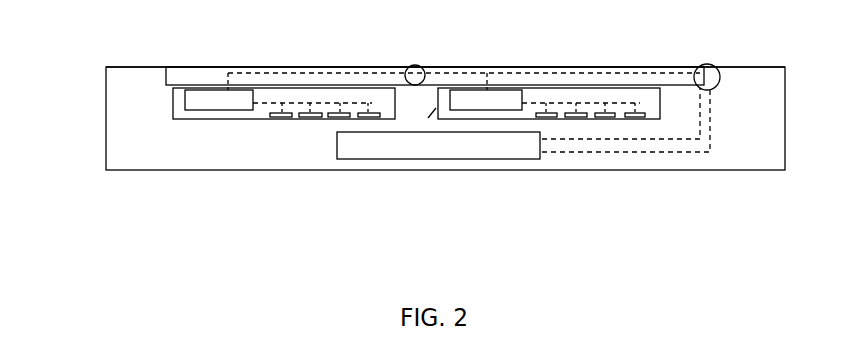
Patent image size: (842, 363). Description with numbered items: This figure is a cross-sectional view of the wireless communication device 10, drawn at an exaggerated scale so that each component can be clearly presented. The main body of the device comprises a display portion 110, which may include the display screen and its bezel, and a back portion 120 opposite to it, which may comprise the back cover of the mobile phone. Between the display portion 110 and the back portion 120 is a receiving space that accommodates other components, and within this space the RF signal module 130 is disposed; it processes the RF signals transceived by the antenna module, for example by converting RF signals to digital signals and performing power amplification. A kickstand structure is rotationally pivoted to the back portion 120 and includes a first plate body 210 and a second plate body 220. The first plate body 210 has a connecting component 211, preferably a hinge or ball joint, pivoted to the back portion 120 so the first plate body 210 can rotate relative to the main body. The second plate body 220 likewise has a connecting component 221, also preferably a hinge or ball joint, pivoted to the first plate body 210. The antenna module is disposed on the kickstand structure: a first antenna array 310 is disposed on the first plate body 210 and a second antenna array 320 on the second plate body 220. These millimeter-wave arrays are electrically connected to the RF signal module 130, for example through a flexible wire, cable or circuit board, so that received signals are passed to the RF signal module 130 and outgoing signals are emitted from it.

The wireless communication device 10 is at (81, 142).
The display portion 110 is at (445, 142).
The back portion 120 is at (752, 67).
The RF signal module 130 is at (398, 150).
The first plate body 210 is at (582, 75).
The connecting component 211 is at (712, 68).
The second plate body 220 is at (203, 75).
The connecting component 221 is at (417, 76).
The first antenna array 310 is at (652, 118).
The second antenna array 320 is at (210, 120).